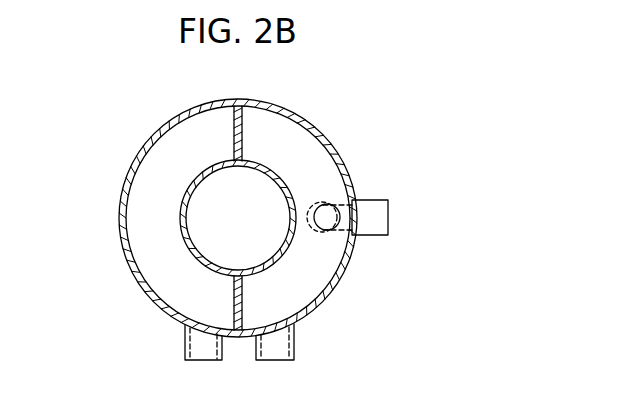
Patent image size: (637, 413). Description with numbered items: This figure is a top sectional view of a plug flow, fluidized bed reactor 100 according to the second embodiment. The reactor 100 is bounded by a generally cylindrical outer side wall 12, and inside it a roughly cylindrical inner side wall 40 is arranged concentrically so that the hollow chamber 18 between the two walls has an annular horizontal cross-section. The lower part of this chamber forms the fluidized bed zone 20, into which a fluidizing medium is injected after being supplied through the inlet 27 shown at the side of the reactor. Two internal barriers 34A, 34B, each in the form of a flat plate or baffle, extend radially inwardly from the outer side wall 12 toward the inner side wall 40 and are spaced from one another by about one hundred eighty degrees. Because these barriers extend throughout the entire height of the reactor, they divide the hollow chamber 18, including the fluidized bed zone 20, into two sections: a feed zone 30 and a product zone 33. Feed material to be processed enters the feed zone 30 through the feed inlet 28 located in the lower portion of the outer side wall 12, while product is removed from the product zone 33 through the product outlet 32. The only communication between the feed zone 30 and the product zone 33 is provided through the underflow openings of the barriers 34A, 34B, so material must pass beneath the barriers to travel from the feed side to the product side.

The reactor 100 is at (367, 100).
The outer side wall 12 is at (353, 163).
The fluidized bed zone 20 is at (187, 143).
The hollow chamber 18 is at (157, 195).
The feed zone 30 is at (270, 303).
The inner side wall 40 is at (182, 241).
The product zone 33 is at (190, 302).
The barrier 34A is at (243, 137).
The barrier 34B is at (243, 305).
The inlet 27 is at (390, 218).
The product outlet 32 is at (185, 360).
The feed inlet 28 is at (295, 362).